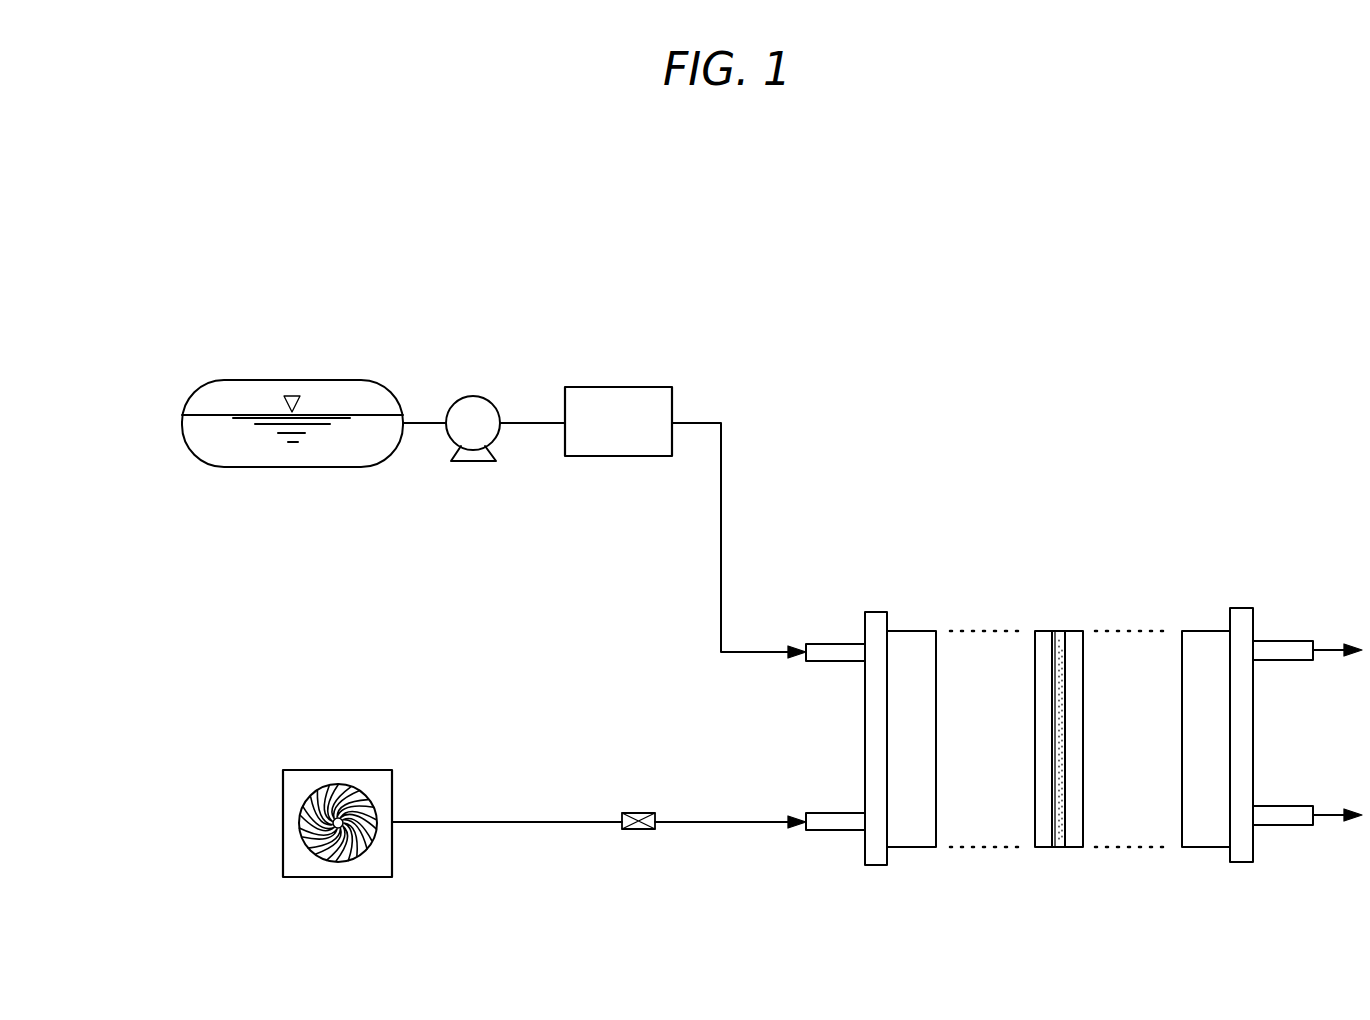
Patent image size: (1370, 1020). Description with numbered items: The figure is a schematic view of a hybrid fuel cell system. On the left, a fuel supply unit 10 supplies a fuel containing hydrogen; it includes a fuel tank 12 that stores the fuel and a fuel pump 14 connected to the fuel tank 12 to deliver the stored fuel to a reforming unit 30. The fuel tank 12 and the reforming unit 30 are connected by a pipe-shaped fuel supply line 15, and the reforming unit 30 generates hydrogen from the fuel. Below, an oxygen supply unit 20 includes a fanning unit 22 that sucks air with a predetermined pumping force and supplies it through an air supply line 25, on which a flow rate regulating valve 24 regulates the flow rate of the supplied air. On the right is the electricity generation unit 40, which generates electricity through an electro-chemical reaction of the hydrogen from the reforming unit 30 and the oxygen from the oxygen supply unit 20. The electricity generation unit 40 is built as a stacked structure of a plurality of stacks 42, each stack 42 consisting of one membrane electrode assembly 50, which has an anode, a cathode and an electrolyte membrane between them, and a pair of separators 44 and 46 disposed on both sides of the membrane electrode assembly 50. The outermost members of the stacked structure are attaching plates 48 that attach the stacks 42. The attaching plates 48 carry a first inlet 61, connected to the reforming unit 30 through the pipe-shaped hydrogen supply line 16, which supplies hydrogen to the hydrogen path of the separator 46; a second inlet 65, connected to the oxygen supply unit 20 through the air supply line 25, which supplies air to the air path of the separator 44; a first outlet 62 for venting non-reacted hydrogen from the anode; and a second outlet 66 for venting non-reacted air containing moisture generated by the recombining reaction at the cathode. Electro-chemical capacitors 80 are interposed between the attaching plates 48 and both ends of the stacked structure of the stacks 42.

The fuel supply unit 10 is at (267, 464).
The fuel tank 12 is at (309, 468).
The fuel pump 14 is at (470, 396).
The fuel supply line 15 is at (531, 421).
The hydrogen supply line 16 is at (722, 535).
The reforming unit 30 is at (616, 387).
The oxygen supply unit 20 is at (286, 797).
The fanning unit 22 is at (336, 770).
The flow rate regulating valve 24 is at (634, 812).
The air supply line 25 is at (500, 821).
The electricity generation unit 40 is at (1084, 707).
The stack 42 is at (1057, 678).
The separator 44 is at (1045, 633).
The separator 46 is at (1088, 707).
The attaching plates 48 is at (865, 738).
The membrane electrode assembly 50 is at (1058, 633).
The first inlet 61 is at (822, 643).
The first outlet 62 is at (1295, 827).
The second inlet 65 is at (822, 831).
The second outlet 66 is at (1296, 639).
The electro-chemical capacitor 80 is at (915, 838).